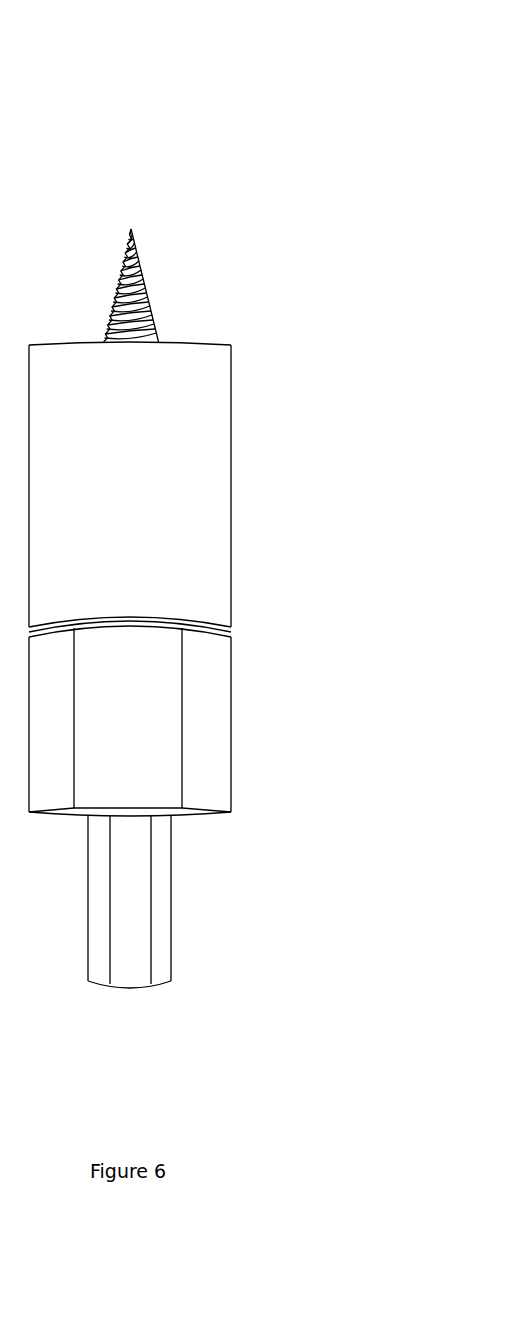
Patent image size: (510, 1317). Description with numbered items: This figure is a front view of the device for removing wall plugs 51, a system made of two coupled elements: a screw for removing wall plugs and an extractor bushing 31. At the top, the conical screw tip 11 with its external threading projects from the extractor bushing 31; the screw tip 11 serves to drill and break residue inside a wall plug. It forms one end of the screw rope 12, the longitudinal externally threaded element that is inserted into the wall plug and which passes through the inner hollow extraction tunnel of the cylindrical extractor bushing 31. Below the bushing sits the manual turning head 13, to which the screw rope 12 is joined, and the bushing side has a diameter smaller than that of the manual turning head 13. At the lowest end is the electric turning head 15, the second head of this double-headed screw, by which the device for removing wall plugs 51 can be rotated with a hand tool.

The device for removing wall plugs 51 is at (43, 267).
The screw tip 11 is at (133, 228).
The screw rope 12 is at (140, 298).
The extractor bushing 31 is at (153, 497).
The manual turning head 13 is at (203, 685).
The electric turning head 15 is at (158, 916).